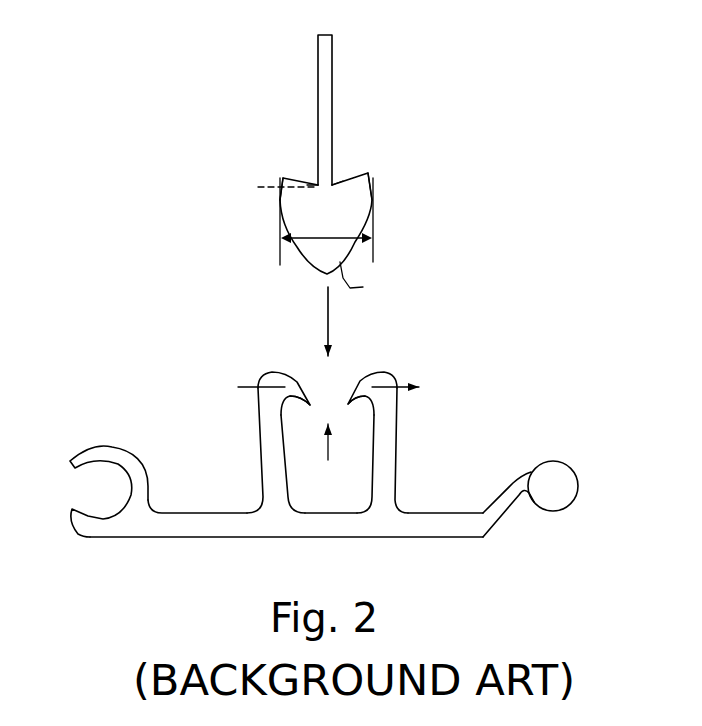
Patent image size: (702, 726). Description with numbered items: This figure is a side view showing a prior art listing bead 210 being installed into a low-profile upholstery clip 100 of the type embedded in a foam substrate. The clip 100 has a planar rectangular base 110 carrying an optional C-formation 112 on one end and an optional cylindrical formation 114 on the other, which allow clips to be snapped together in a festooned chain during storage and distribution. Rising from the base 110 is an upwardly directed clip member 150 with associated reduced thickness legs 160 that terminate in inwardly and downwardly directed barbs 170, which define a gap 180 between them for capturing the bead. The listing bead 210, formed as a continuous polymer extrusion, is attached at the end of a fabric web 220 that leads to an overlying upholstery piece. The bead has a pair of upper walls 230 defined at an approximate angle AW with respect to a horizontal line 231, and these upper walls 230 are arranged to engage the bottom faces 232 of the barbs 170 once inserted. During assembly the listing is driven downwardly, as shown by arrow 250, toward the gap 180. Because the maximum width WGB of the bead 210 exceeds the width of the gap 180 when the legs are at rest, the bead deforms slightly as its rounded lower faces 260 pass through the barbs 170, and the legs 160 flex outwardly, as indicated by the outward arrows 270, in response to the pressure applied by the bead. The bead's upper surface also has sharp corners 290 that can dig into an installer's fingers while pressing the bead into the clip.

The upholstery clip 100 is at (393, 366).
The base 110 is at (382, 482).
The C-formation 112 is at (69, 460).
The cylindrical formation 114 is at (563, 478).
The clip member 150 is at (401, 458).
The legs 160 is at (272, 470).
The barbs 170 is at (292, 372).
The gap 180 is at (330, 468).
The listing bead 210 is at (377, 190).
The web 220 is at (332, 88).
The upper walls 230 is at (315, 183).
The horizontal line 231 is at (260, 188).
The bottom faces 232 is at (302, 405).
The arrow 250 is at (330, 330).
The rounded lower faces 260 is at (315, 268).
The outward arrows 270 is at (255, 386).
The corners 290 is at (283, 177).
The angle AW is at (310, 184).
The maximum width WGB is at (325, 238).